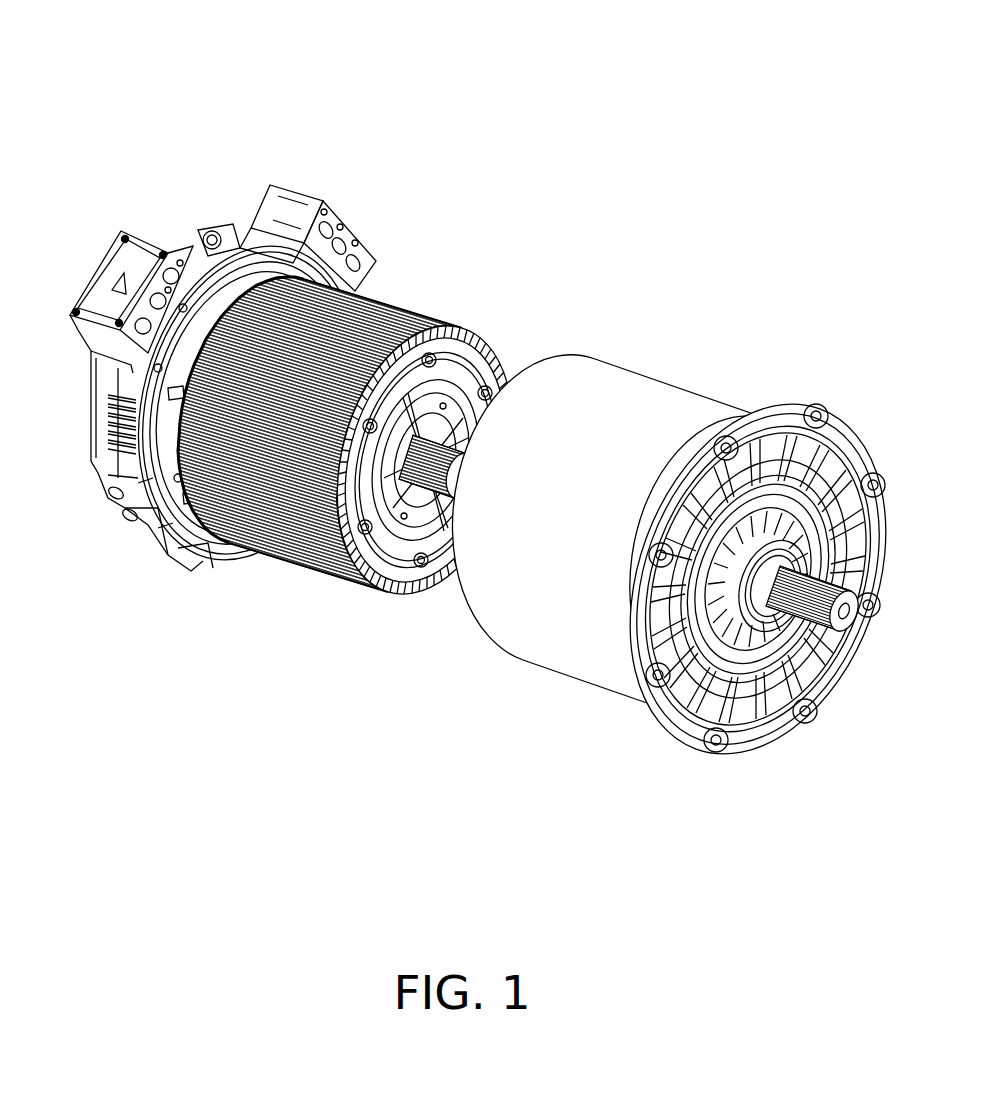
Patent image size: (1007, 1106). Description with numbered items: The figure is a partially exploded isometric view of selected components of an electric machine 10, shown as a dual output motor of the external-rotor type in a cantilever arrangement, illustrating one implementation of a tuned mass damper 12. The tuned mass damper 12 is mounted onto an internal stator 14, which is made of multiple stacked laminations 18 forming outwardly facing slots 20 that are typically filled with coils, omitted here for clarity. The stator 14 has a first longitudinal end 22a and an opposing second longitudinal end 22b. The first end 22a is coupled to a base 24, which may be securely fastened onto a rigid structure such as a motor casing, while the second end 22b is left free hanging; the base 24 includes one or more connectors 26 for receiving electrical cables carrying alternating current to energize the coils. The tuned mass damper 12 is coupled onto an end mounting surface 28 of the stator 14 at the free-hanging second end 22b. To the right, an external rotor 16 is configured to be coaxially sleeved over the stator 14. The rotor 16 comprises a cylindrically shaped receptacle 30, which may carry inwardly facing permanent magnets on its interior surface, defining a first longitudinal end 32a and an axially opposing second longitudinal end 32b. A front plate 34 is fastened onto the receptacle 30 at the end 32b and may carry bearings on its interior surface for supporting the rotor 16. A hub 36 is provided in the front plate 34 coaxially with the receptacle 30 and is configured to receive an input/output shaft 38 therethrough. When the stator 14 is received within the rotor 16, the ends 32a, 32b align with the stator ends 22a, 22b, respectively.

The electric machine 10 is at (738, 118).
The tuned mass damper 12 is at (503, 365).
The internal stator 14 is at (378, 290).
The external rotor 16 is at (683, 378).
The stacked laminations 18 is at (397, 297).
The outwardly facing slots 20 is at (443, 308).
The first longitudinal end 22a is at (237, 383).
The second longitudinal end 22b is at (301, 453).
The base 24 is at (287, 177).
The connectors 26 is at (323, 203).
The end mounting surface 28 is at (497, 308).
The receptacle 30 is at (596, 374).
The first longitudinal end 32a is at (500, 497).
The second longitudinal end 32b is at (627, 533).
The front plate 34 is at (757, 430).
The hub 36 is at (767, 522).
The input/output shaft 38 is at (838, 593).